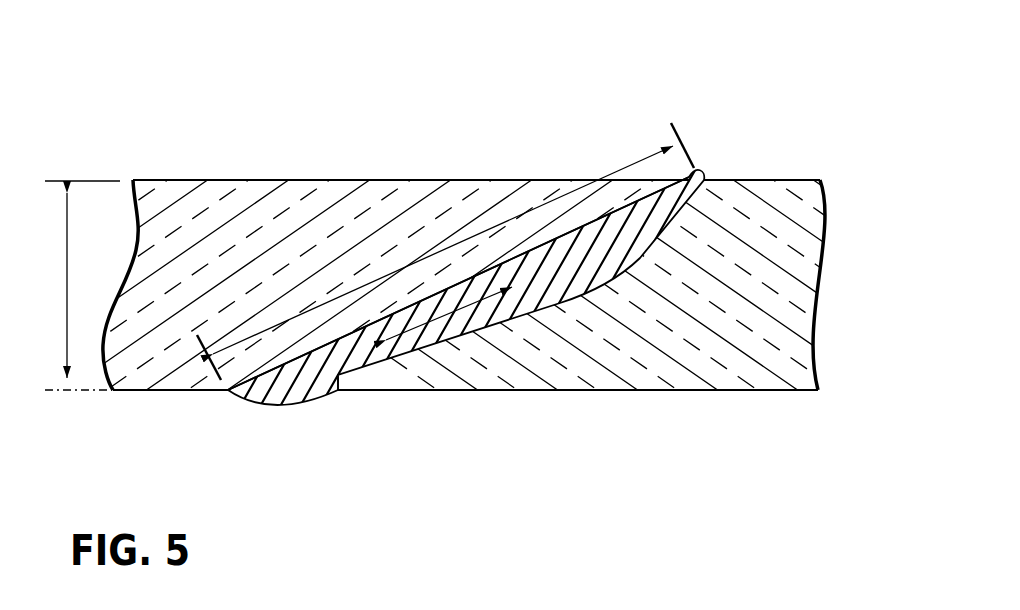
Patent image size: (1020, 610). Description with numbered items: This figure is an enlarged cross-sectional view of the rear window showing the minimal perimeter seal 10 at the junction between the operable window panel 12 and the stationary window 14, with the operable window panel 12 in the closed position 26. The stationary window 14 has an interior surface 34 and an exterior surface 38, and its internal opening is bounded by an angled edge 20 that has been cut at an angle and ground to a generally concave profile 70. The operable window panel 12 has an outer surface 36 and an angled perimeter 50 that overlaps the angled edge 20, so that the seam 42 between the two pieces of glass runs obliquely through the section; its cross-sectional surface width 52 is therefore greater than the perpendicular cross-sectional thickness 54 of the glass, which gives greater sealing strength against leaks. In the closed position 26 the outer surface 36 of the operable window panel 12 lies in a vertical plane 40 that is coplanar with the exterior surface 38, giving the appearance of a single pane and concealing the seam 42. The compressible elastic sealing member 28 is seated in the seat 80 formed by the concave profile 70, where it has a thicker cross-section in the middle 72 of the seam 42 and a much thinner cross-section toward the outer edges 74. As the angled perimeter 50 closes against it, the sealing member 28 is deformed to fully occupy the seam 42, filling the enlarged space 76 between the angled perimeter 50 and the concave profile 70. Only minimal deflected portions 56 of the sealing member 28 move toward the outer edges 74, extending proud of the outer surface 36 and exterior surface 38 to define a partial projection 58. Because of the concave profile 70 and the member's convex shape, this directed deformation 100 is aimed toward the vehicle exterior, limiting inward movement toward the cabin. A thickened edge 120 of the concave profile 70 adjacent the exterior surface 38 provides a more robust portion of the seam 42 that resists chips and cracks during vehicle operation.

The minimal perimeter seal 10 is at (405, 418).
The operable window panel 12 is at (247, 197).
The stationary window 14 is at (790, 192).
The angled edge 20 is at (572, 285).
The closed position 26 is at (379, 162).
The compressible elastic sealing member 28 is at (502, 295).
The interior surface 34 is at (724, 178).
The outer surface 36 is at (132, 392).
The exterior surface 38 is at (683, 392).
The vertical plane 40 is at (822, 394).
The seam 42 is at (264, 437).
The angled perimeter 50 is at (640, 195).
The cross-sectional surface width 52 is at (526, 213).
The perpendicular cross-sectional thickness 54 is at (66, 294).
The deflected portion 56 is at (244, 412).
The partial projection 58 is at (313, 398).
The concave profile 70 is at (612, 268).
The middle 72 is at (573, 302).
The outer edges 74 is at (708, 180).
The enlarged space 76 is at (471, 339).
The seat 80 is at (657, 225).
The directed deformation 100 is at (421, 349).
The thickened edge 120 is at (356, 389).